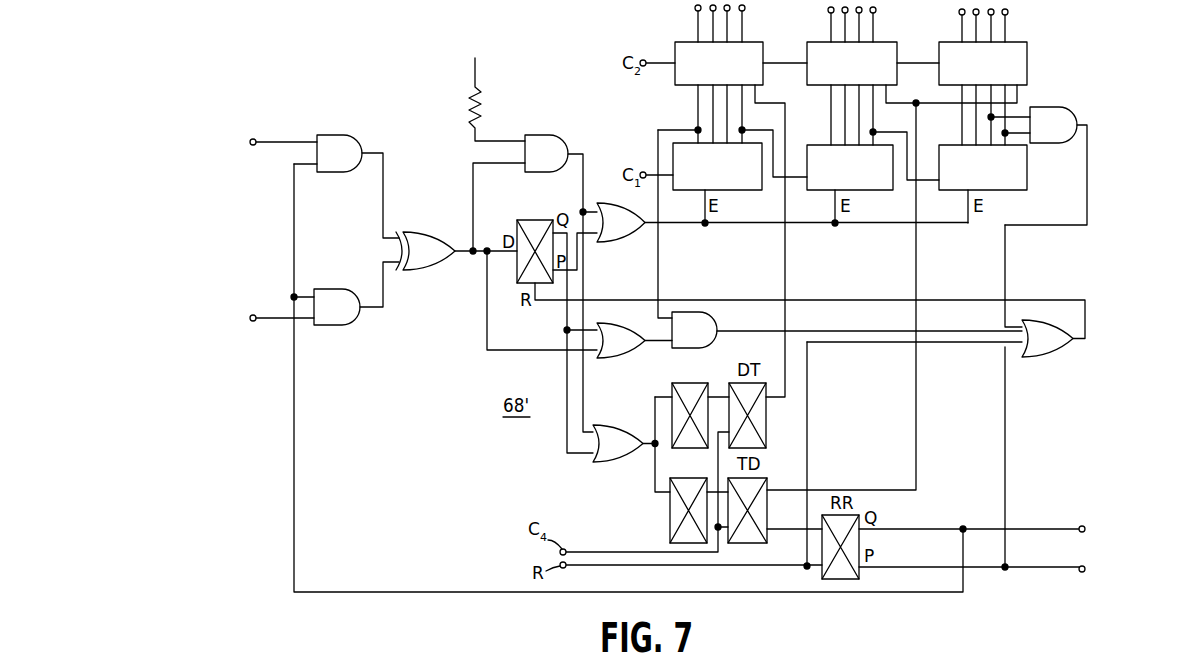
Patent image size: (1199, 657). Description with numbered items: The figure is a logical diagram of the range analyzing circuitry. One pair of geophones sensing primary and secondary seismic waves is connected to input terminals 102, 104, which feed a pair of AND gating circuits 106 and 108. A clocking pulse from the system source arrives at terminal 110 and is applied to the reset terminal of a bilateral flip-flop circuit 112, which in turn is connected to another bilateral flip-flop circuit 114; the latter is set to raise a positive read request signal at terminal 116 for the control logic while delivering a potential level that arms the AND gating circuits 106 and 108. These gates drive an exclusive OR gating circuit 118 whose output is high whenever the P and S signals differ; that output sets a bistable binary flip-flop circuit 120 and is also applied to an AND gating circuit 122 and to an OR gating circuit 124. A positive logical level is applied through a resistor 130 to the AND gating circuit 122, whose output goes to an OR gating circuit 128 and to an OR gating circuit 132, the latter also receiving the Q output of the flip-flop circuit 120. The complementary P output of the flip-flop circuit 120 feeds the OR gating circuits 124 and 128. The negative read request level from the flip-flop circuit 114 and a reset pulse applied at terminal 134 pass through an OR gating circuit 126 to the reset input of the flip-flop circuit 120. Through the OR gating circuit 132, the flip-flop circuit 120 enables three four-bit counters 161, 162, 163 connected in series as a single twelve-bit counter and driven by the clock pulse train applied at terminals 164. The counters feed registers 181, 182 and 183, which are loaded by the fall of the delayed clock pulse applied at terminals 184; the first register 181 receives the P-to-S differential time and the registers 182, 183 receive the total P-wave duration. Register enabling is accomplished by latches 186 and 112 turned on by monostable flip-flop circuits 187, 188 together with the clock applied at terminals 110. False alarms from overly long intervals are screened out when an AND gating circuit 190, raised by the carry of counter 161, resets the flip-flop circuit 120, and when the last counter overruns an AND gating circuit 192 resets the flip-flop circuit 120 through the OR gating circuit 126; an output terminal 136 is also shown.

The input terminal 102 is at (253, 139).
The input terminal 104 is at (253, 315).
The AND gating circuit 106 is at (321, 135).
The AND gating circuit 108 is at (318, 289).
The clock terminal 110 is at (565, 549).
The bilateral flip-flop circuit 112 is at (767, 512).
The bilateral flip-flop circuit 114 is at (859, 575).
The read request terminal 116 is at (1080, 526).
The exclusive OR gating circuit 118 is at (406, 232).
The bistable binary flip-flop circuit 120 is at (539, 220).
The AND gating circuit 122 is at (534, 135).
The OR gating circuit 124 is at (606, 358).
The OR gating circuit 126 is at (1036, 357).
The OR gating circuit 128 is at (615, 463).
The resistor 130 is at (471, 97).
The OR gating circuit 132 is at (613, 243).
The reset terminal 134 is at (565, 568).
The output terminal 136 is at (1081, 572).
The counter 161 is at (730, 195).
The counter 162 is at (862, 195).
The counter 163 is at (992, 195).
The clock 1 terminal 164 is at (643, 172).
The register 181 is at (752, 42).
The register 182 is at (887, 42).
The register 183 is at (1018, 42).
The clock 2 terminal 184 is at (643, 60).
The latch 186 is at (766, 428).
The monostable flip-flop circuit 187 is at (677, 383).
The monostable flip-flop circuit 188 is at (670, 512).
The AND gating circuit 190 is at (716, 326).
The AND gating circuit 192 is at (1052, 107).